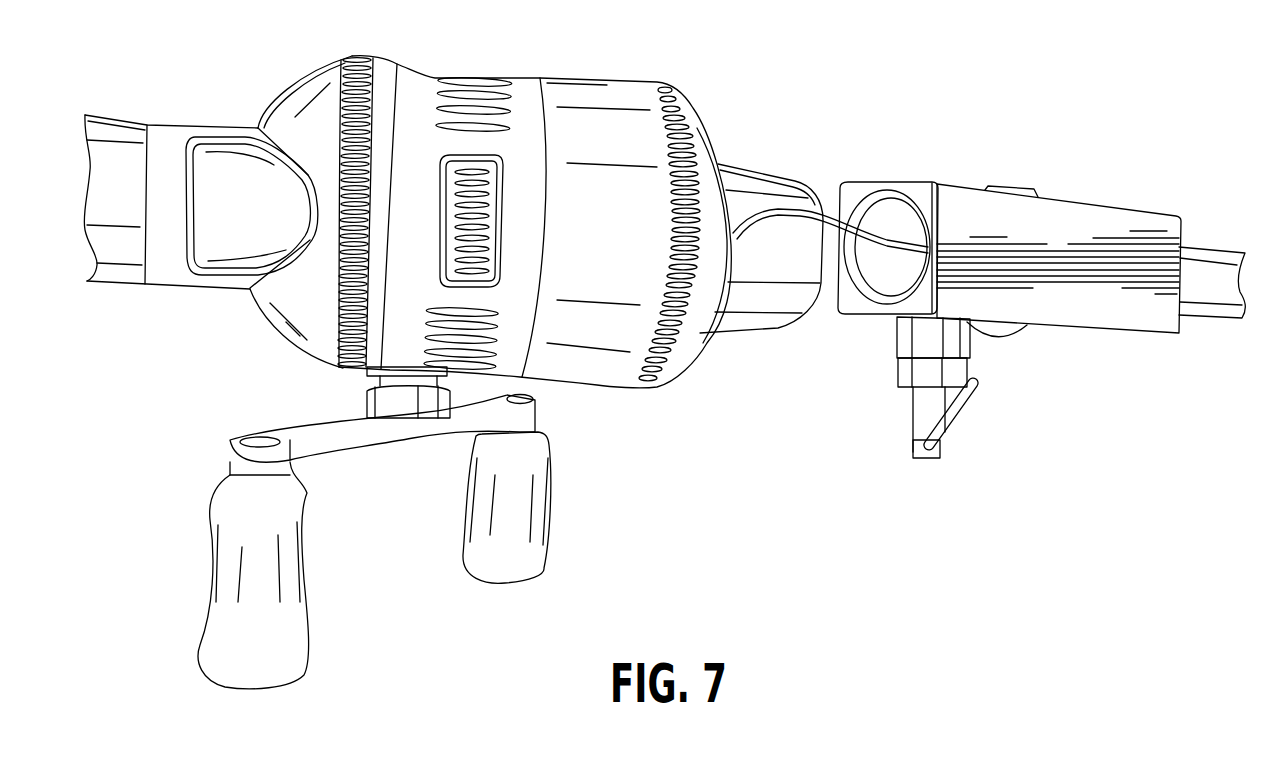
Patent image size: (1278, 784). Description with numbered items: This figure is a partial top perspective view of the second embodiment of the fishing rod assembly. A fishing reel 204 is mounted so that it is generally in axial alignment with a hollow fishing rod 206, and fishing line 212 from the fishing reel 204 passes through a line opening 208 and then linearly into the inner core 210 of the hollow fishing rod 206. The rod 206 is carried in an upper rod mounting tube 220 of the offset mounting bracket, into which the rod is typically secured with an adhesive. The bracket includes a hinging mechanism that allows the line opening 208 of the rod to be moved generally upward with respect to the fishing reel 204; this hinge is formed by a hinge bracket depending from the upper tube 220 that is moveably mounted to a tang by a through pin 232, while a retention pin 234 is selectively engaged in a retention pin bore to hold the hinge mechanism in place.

The fishing reel 204 is at (578, 390).
The hollow fishing rod 206 is at (1210, 258).
The line opening 208 is at (860, 200).
The inner core 210 is at (887, 208).
The fishing line 212 is at (836, 220).
The upper rod mounting tube 220 is at (1078, 297).
The through pin 232 is at (1003, 340).
The retention pin 234 is at (940, 450).